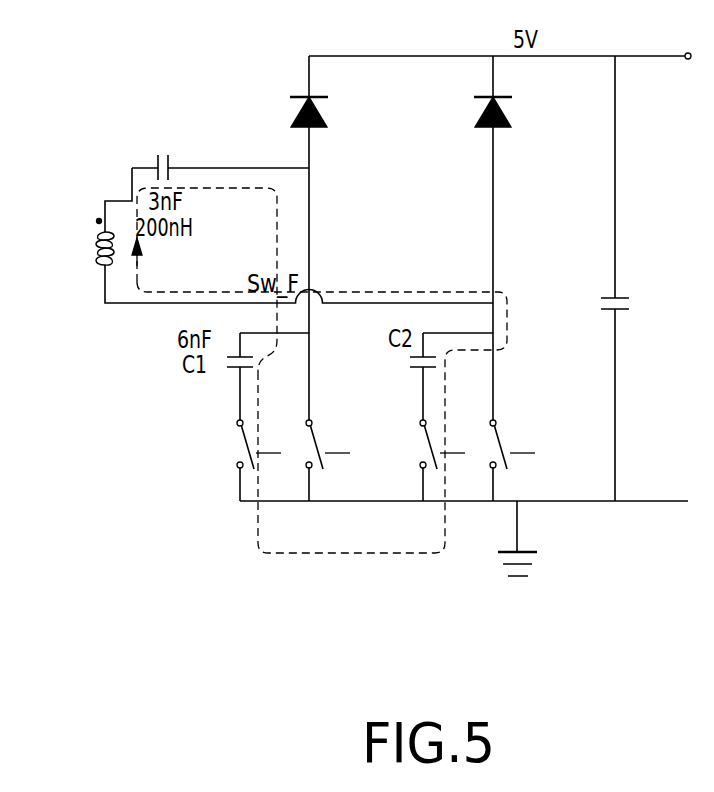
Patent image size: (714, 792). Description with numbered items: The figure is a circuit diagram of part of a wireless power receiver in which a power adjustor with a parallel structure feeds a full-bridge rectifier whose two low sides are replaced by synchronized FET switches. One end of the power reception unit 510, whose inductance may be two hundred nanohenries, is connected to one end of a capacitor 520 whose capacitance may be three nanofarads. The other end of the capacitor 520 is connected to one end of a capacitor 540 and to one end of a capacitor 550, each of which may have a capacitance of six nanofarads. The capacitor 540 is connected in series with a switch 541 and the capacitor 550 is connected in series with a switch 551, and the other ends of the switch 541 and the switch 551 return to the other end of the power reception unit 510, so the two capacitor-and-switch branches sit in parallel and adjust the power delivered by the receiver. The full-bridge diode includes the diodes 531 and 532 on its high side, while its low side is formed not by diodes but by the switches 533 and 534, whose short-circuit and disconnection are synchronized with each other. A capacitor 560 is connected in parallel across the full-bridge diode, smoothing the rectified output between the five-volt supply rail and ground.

The power reception unit 510 is at (100, 266).
The capacitor 520 is at (168, 156).
The diode 531 is at (320, 108).
The diode 532 is at (503, 108).
The switch 533 is at (313, 424).
The switch 534 is at (497, 424).
The capacitor 540 is at (230, 367).
The switch 541 is at (248, 445).
The capacitor 550 is at (413, 367).
The switch 551 is at (433, 445).
The capacitor 560 is at (628, 311).